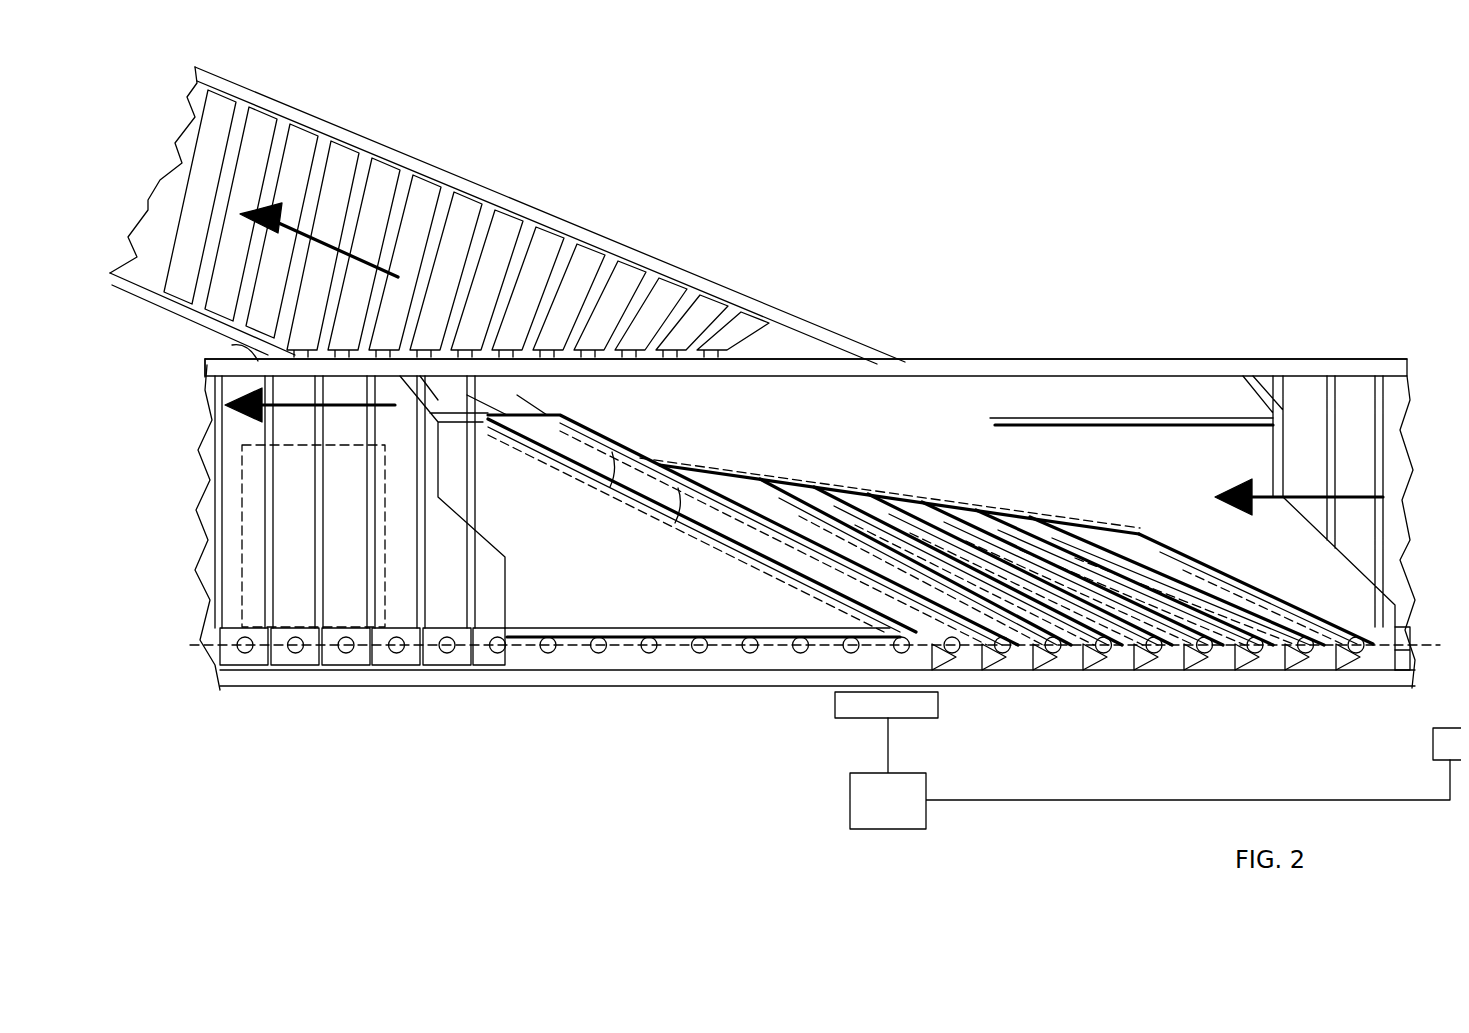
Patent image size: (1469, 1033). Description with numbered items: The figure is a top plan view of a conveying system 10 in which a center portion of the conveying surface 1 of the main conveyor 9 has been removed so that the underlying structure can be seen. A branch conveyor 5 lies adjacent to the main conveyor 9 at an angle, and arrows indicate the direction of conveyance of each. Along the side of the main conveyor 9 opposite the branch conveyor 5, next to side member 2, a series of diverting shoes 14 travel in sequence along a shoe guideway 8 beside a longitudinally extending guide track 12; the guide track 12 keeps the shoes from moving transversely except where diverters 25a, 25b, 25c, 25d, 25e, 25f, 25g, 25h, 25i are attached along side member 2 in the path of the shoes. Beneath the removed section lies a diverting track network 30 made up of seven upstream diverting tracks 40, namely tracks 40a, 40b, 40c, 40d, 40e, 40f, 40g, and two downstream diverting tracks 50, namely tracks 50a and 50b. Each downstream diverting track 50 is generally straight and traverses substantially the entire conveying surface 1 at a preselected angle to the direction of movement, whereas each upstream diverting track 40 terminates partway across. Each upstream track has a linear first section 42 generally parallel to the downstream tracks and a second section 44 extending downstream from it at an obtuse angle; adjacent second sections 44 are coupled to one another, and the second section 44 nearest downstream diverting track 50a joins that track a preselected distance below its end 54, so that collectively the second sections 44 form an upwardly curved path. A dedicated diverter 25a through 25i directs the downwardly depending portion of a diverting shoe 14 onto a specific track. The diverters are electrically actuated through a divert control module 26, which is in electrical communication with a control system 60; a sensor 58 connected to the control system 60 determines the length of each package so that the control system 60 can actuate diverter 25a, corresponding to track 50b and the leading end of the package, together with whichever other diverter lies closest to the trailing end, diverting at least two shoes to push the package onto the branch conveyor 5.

The conveying surface 1 is at (1422, 398).
The side member 2 is at (477, 688).
The branch conveyor 5 is at (576, 222).
The shoe guideway 8 is at (565, 652).
The main conveyor 9 is at (1130, 359).
The conveying system 10 is at (1192, 184).
The guide track 12 is at (626, 640).
The diverting shoe 14 is at (347, 665).
The diverter 25a is at (947, 670).
The diverter 25b is at (997, 670).
The diverter 25c is at (1048, 670).
The diverter 25d is at (1098, 670).
The diverter 25e is at (1148, 670).
The diverter 25f is at (1198, 670).
The diverter 25g is at (1249, 670).
The diverter 25h is at (1300, 670).
The diverter 25i is at (1352, 670).
The divert control module 26 is at (835, 705).
The diverting track network 30 is at (993, 464).
The upstream diverting track 40 is at (1027, 520).
The upstream diverting track 40a is at (1307, 613).
The upstream diverting track 40b is at (1243, 603).
The upstream diverting track 40c is at (1150, 587).
The upstream diverting track 40d is at (1100, 532).
The upstream diverting track 40e is at (951, 540).
The upstream diverting track 40f is at (903, 537).
The upstream diverting track 40g is at (830, 530).
The first section 42 is at (797, 510).
The second section 44 is at (754, 479).
The downstream diverting track 50 is at (568, 462).
The downstream diverting track 50a is at (675, 523).
The downstream diverting track 50b is at (760, 573).
The end 54 is at (560, 417).
The sensor 58 is at (1450, 728).
The control system 60 is at (852, 805).